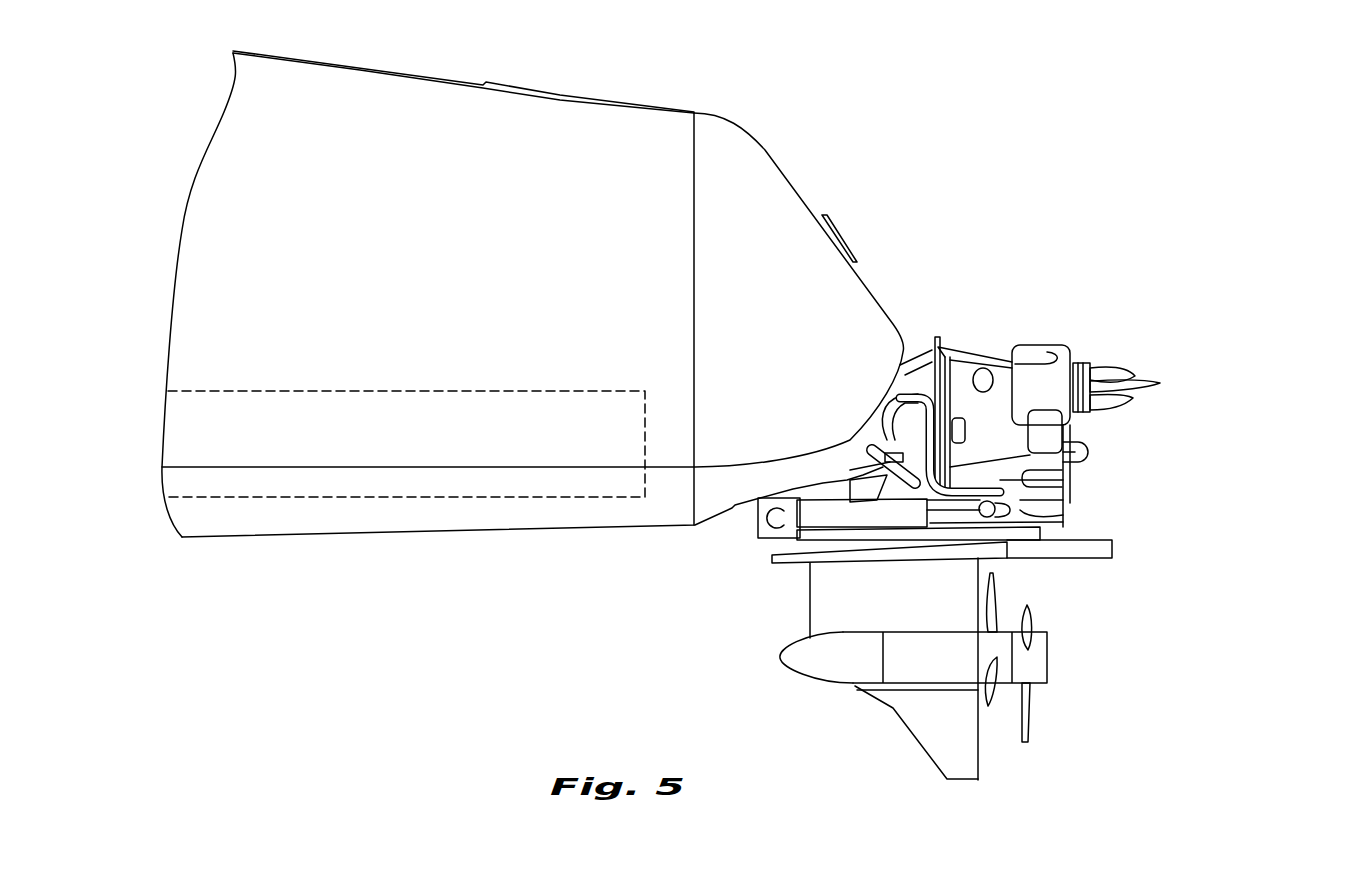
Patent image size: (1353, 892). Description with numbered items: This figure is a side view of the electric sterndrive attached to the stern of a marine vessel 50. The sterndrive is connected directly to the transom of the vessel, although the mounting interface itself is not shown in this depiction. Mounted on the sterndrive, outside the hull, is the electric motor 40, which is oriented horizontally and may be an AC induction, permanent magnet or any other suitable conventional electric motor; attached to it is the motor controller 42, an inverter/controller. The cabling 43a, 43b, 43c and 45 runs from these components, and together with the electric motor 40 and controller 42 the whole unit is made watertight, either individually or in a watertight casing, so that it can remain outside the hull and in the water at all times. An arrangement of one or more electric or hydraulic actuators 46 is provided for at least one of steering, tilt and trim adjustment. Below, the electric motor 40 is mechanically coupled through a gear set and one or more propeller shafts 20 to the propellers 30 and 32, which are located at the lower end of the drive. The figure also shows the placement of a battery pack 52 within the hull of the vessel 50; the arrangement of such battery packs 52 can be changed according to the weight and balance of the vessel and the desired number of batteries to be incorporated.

The propeller shaft 20 is at (920, 658).
The propeller 30 is at (1032, 710).
The propeller 32 is at (990, 695).
The electric motor 40 is at (1037, 478).
The motor controller 42 is at (1060, 352).
The cabling 43a is at (1160, 383).
The cabling 43b is at (1125, 386).
The cabling 43c is at (1111, 402).
The cabling 45 is at (972, 352).
The actuator 46 is at (825, 518).
The marine vessel 50 is at (450, 262).
The battery pack 52 is at (380, 487).